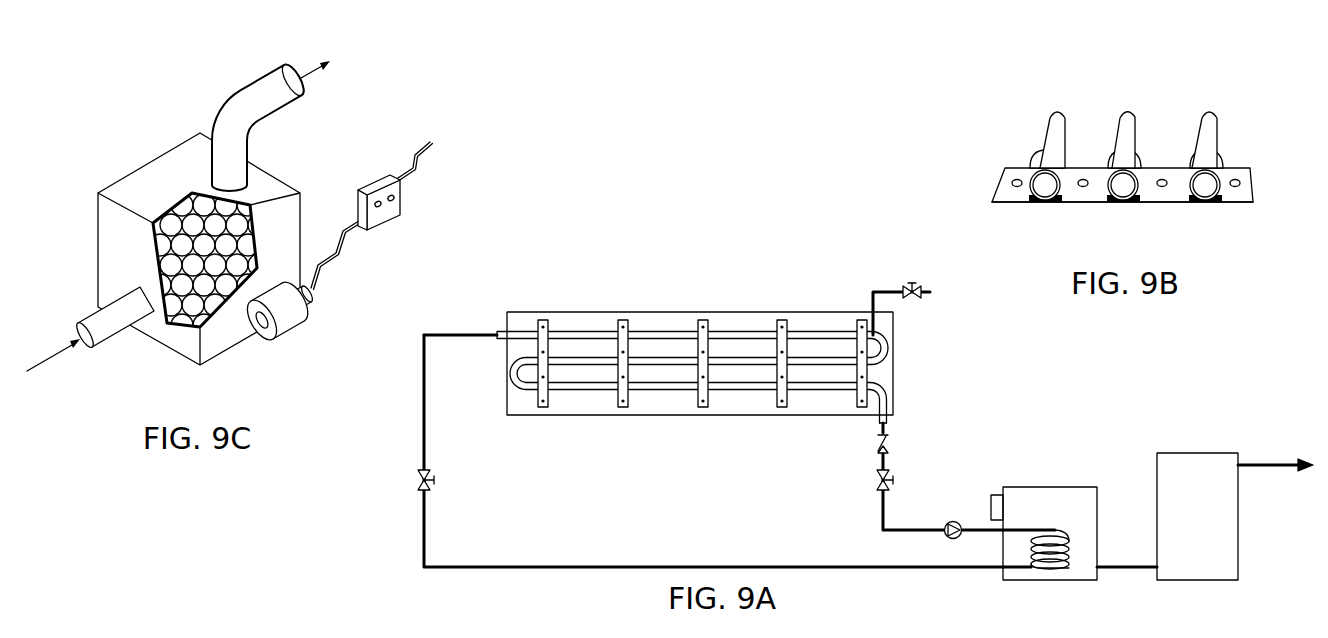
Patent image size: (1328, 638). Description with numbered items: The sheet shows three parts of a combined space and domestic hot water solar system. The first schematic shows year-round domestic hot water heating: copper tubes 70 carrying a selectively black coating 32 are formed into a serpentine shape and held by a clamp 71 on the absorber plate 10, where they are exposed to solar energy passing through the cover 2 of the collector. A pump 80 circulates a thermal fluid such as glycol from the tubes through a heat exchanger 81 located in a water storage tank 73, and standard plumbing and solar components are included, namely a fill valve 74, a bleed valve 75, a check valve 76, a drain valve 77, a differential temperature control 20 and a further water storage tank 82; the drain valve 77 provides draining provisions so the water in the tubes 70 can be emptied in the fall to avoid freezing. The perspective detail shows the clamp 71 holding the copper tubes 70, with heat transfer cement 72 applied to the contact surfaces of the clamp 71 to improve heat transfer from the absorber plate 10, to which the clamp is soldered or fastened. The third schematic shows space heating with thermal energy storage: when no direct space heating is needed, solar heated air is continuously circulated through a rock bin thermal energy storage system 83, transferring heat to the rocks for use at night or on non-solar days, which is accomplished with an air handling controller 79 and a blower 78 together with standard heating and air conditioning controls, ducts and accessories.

In FIG. 9A, the cover 2 is at (920, 637).
In FIG. 9A, the absorber plate 10 is at (663, 322).
In FIG. 9A, the differential temperature control 20 is at (990, 497).
In FIG. 9A, the selectively black coating 32 is at (602, 330).
In FIG. 9B, the selectively black coating 32 is at (1128, 128).
In FIG. 9A, the copper tubes 70 is at (748, 333).
In FIG. 9B, the copper tubes 70 is at (1043, 193).
In FIG. 9A, the clamp 71 is at (543, 320).
In FIG. 9B, the clamp 71 is at (1019, 167).
In FIG. 9B, the heat transfer cement 72 is at (1222, 203).
In FIG. 9A, the water storage tank 73 is at (1045, 487).
In FIG. 9A, the fill valve 74 is at (430, 478).
In FIG. 9A, the bleed valve 75 is at (905, 290).
In FIG. 9A, the check valve 76 is at (888, 438).
In FIG. 9A, the drain valve 77 is at (876, 480).
In FIG. 9C, the blower 78 is at (286, 333).
In FIG. 9C, the air handling controller 79 is at (391, 211).
In FIG. 9A, the pump 80 is at (948, 523).
In FIG. 9A, the heat exchanger 81 is at (1067, 538).
In FIG. 9A, the water storage tank 82 is at (1240, 565).
In FIG. 9C, the rock bin thermal energy storage system 83 is at (120, 183).